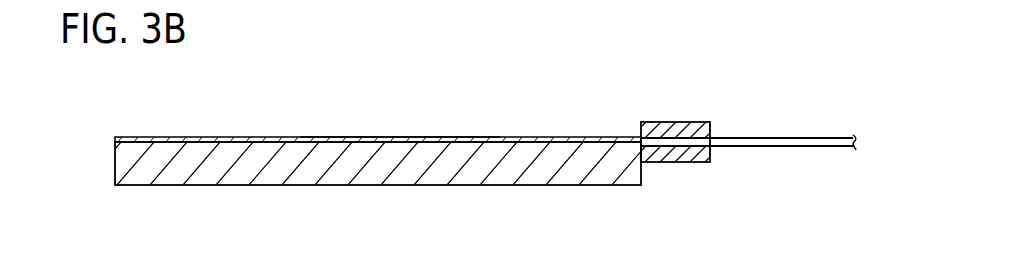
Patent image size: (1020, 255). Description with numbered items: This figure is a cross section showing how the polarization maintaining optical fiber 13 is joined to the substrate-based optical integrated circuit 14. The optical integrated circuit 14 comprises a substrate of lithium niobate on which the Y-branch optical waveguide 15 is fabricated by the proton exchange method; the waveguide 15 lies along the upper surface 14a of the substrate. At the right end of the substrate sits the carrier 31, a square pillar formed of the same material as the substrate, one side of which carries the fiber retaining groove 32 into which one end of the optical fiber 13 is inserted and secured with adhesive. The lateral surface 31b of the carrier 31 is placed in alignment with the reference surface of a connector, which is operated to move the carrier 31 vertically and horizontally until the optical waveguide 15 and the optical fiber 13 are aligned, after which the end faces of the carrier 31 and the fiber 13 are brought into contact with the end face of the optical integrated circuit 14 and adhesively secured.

The second optical fiber 13 is at (768, 136).
The substrate-based optical integrated circuit 14 is at (412, 185).
The surface of base body 14a is at (393, 139).
The Y-branch optical waveguide 15 is at (295, 137).
The carrier 31 is at (675, 154).
The lateral surface 31b is at (685, 170).
The fiber retaining groove 32 is at (708, 141).